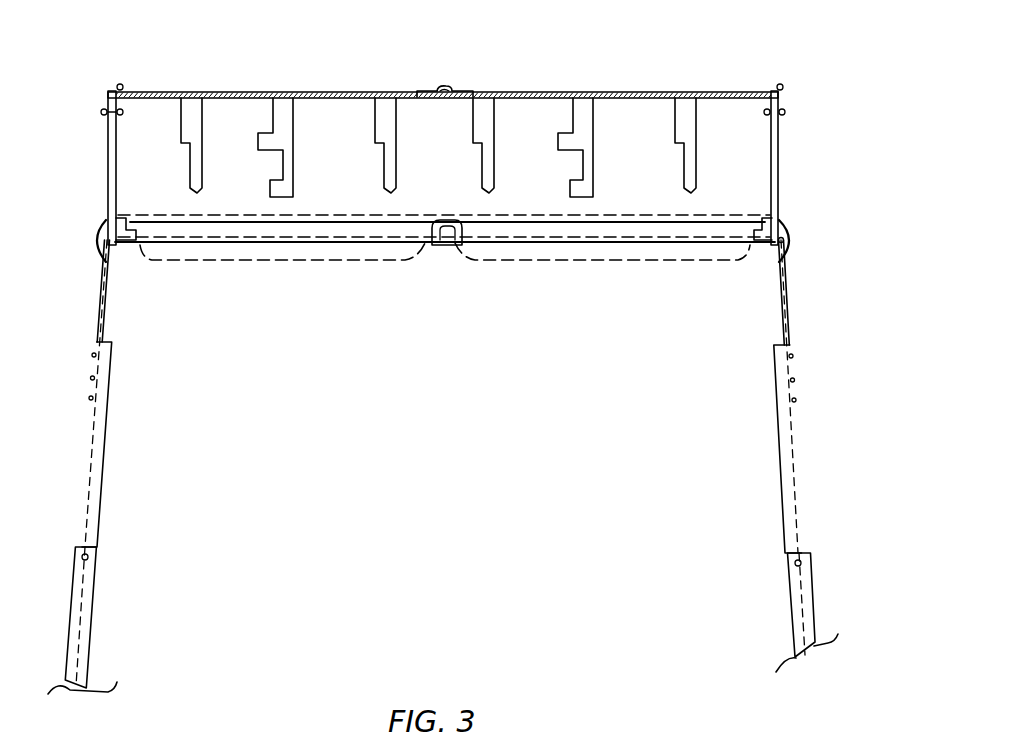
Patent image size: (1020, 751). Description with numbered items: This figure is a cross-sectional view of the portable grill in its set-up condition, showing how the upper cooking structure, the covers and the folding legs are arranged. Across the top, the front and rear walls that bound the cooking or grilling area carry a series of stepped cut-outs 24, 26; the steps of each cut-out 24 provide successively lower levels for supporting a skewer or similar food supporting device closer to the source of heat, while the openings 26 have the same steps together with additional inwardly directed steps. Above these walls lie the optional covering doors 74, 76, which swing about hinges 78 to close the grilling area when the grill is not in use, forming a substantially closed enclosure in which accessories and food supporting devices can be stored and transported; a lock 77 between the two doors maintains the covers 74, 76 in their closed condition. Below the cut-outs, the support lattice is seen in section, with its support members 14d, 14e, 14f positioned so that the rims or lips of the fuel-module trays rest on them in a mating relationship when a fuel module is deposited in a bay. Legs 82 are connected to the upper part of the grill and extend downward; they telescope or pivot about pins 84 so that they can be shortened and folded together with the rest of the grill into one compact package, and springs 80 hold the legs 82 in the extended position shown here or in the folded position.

The support member 14d is at (120, 246).
The support member 14e is at (445, 248).
The support member 14f is at (763, 252).
The stepped cut-out 24 is at (192, 106).
The stepped cut-out 26 is at (285, 100).
The covering door 74 is at (675, 97).
The covering door 76 is at (153, 92).
The lock 77 is at (448, 88).
The hinge 78 is at (108, 90).
The spring 80 is at (798, 240).
The leg 82 is at (100, 327).
The pin 84 is at (80, 555).